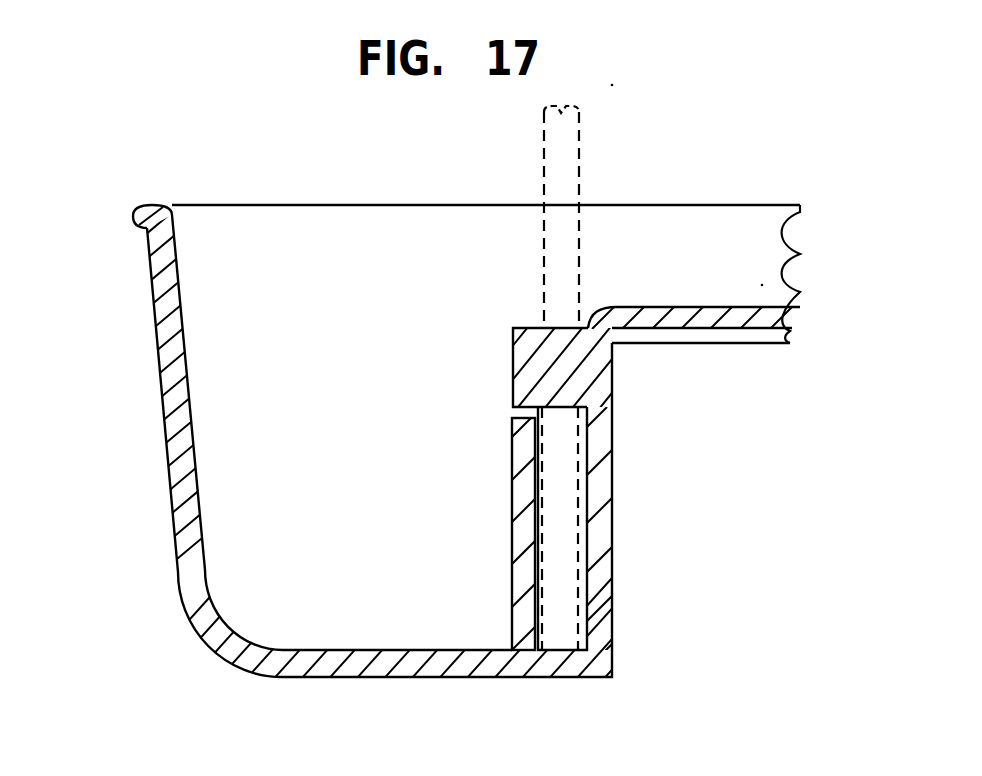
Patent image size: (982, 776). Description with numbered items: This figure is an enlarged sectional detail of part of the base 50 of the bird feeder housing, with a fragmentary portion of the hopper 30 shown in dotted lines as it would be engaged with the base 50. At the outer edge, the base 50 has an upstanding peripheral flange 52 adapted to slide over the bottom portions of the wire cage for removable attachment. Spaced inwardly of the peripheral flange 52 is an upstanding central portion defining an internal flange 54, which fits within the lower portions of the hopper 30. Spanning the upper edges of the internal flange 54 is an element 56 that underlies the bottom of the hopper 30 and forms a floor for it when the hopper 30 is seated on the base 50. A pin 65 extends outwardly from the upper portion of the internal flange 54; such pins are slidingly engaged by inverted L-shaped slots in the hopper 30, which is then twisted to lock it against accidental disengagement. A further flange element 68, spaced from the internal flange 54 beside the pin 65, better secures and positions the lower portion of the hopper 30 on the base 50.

The hopper 30 is at (578, 164).
The base 50 is at (153, 460).
The peripheral flange 52 is at (159, 362).
The internal flange 54 is at (588, 550).
The element 56 is at (732, 312).
The pins 65 is at (527, 360).
The flange elements 68 is at (518, 480).